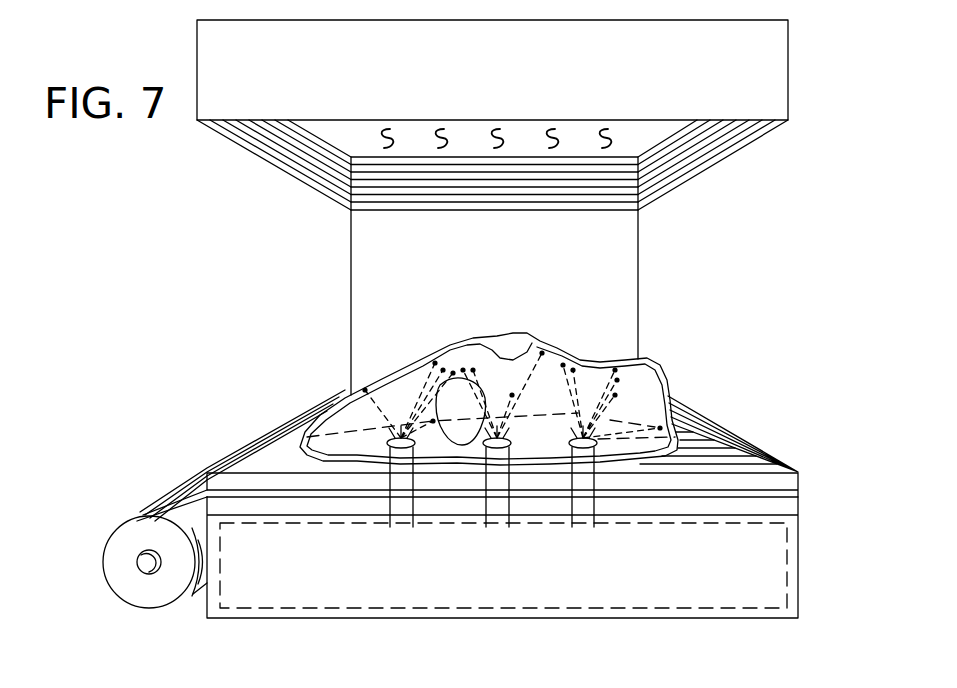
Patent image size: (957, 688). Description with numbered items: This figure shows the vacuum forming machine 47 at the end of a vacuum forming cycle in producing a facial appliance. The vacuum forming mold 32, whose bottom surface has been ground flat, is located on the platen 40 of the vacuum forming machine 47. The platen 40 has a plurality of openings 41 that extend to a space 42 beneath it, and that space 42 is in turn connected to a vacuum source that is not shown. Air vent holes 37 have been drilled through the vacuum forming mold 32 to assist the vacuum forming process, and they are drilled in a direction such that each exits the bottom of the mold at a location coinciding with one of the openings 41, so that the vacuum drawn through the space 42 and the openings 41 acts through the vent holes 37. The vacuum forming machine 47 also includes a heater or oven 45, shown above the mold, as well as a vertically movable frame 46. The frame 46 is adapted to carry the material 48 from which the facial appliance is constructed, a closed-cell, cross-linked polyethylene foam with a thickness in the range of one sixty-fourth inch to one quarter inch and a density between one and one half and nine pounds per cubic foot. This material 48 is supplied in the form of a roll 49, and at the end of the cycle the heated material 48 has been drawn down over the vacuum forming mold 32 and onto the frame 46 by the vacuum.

The heater or oven 45 is at (770, 67).
The vacuum forming machine 47 is at (770, 240).
The material 48 is at (665, 362).
The air vent holes 37 is at (365, 390).
The vacuum forming mold 32 is at (658, 414).
The vertically movable frame 46 is at (785, 482).
The platen 40 is at (800, 546).
The space 42 is at (755, 576).
The openings 41 is at (404, 528).
The roll 49 is at (150, 528).